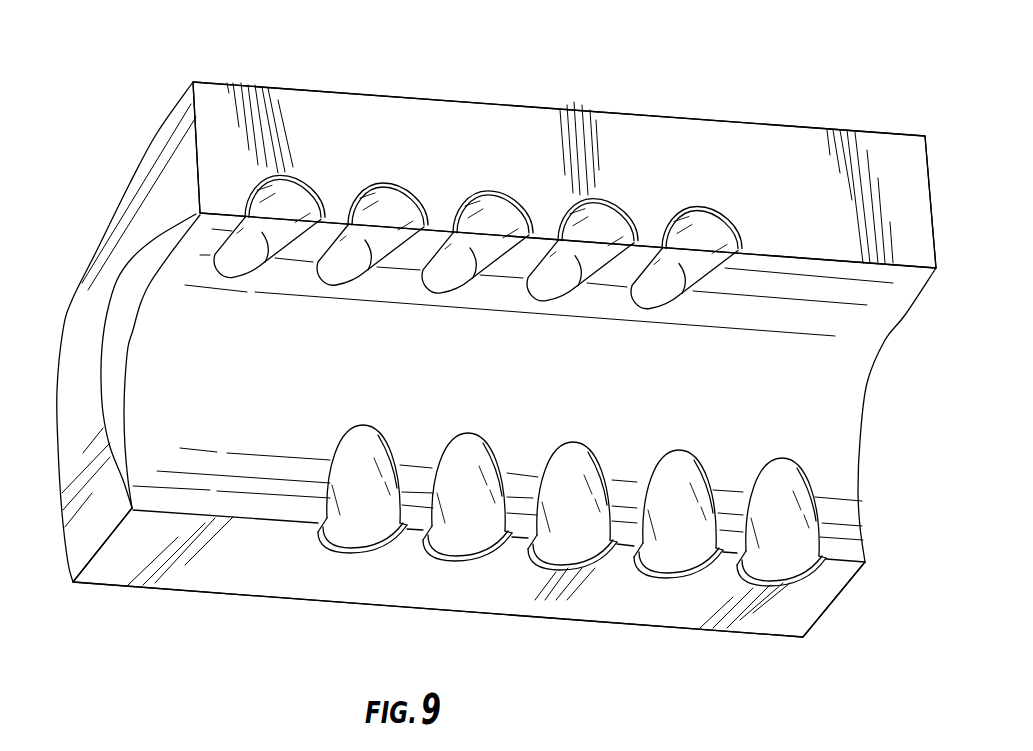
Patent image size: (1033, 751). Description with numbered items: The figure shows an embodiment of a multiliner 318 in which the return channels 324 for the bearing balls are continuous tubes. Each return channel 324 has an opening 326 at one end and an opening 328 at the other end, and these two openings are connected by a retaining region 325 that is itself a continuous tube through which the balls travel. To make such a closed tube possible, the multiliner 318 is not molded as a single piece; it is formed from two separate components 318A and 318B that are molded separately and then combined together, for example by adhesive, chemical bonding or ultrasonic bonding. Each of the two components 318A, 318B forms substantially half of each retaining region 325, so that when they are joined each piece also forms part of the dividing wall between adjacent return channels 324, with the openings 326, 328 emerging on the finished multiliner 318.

The multiliner 318 is at (60, 177).
The first component of the multiliner 318A is at (847, 148).
The second component of the multiliner 318B is at (820, 413).
The retaining region 325 is at (680, 366).
The opening 326 is at (602, 210).
The return channel 324 is at (670, 525).
The opening 328 is at (572, 590).